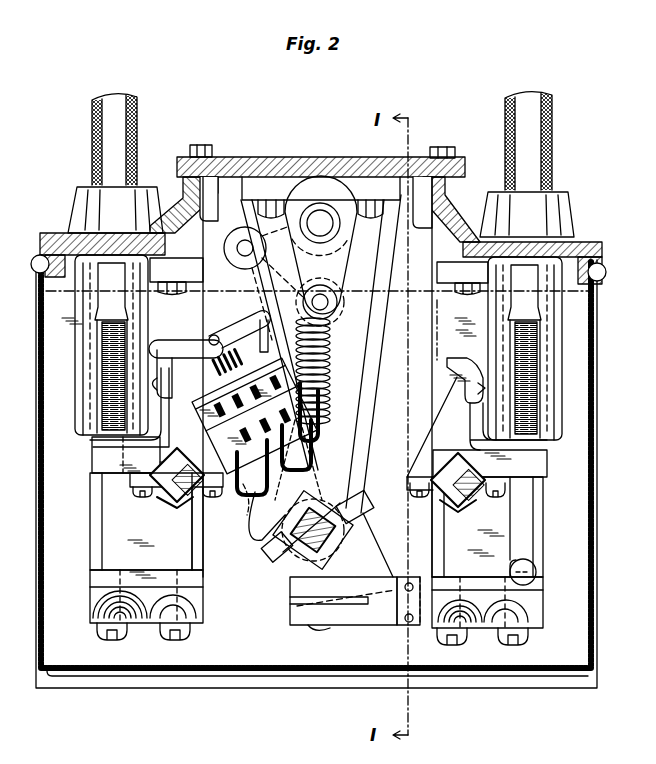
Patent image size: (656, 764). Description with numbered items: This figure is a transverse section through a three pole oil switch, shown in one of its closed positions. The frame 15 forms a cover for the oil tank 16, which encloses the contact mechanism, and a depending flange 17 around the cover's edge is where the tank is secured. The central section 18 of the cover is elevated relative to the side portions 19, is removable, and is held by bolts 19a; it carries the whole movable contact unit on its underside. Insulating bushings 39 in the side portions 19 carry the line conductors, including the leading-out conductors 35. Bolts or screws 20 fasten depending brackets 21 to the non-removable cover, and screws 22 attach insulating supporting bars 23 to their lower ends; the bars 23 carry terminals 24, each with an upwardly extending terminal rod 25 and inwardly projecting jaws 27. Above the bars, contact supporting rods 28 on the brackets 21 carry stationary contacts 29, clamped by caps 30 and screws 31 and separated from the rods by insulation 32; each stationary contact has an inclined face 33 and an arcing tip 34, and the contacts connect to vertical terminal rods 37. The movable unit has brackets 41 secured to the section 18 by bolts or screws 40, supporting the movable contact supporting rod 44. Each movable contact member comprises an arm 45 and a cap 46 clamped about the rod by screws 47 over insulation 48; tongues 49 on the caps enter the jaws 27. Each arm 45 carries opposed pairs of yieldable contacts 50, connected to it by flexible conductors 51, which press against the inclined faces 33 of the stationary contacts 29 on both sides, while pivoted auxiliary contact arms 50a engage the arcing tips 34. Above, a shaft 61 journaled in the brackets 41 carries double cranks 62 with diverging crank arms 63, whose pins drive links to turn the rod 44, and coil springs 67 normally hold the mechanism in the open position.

The frame 15 is at (458, 208).
The oil tank 16 is at (594, 412).
The depending flange 17 is at (600, 278).
The central section 18 is at (264, 165).
The side portions 19 is at (42, 237).
The bolts 19a is at (444, 148).
The bolts or screws 20 is at (172, 283).
The depending brackets 21 is at (440, 332).
The screws 22 is at (103, 626).
The insulating supporting bars 23 is at (142, 622).
The terminals 24 is at (538, 582).
The terminal rod 25 is at (543, 520).
The jaws 27 is at (370, 616).
The contact supporting rods 28 is at (227, 495).
The stationary contacts 29 is at (432, 452).
The caps 30 is at (178, 512).
The screws 31 is at (132, 492).
The insulation 32 is at (168, 499).
The inclined face 33 is at (197, 424).
The auxiliary contact or arcing tip 34 is at (186, 385).
The leading-out conductors 35 is at (138, 124).
The vertical terminal rods 37 is at (90, 440).
The insulating bushings 39 is at (72, 200).
The bolts or screws 40 is at (368, 220).
The depending brackets 41 is at (396, 243).
The movable contact supporting rod 44 is at (326, 549).
The arm 45 is at (318, 471).
The cap 46 is at (359, 513).
The screws 47 is at (318, 493).
The insulation 48 is at (283, 562).
The tongues 49 is at (369, 530).
The yieldable contacts 50 is at (322, 406).
The auxiliary contact arms 50a is at (186, 345).
The flexible conductors 51 is at (316, 437).
The shaft 61 is at (320, 223).
The double cranks 62 is at (308, 190).
The crank arms 63 is at (340, 300).
The coil springs 67 is at (333, 320).